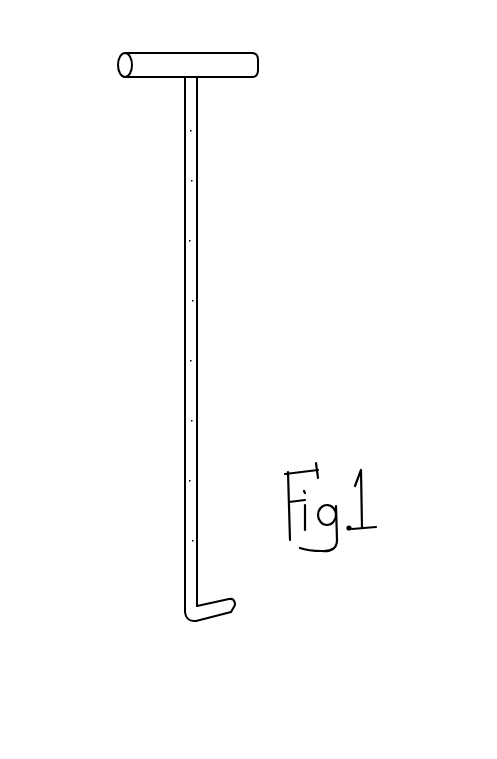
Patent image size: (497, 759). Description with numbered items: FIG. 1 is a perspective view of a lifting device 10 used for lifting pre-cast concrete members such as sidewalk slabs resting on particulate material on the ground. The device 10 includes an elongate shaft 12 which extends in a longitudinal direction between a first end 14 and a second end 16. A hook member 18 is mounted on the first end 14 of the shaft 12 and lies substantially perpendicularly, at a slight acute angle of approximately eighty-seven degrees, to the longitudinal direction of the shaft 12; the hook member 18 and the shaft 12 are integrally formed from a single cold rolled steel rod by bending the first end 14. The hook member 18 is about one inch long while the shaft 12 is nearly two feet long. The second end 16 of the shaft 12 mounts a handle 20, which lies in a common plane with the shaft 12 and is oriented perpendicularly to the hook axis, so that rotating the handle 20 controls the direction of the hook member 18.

The lifting device 10 is at (104, 367).
The elongate shaft 12 is at (193, 352).
The first end 14 is at (182, 603).
The second end 16 is at (200, 80).
The hook member 18 is at (208, 621).
The handle 20 is at (148, 62).